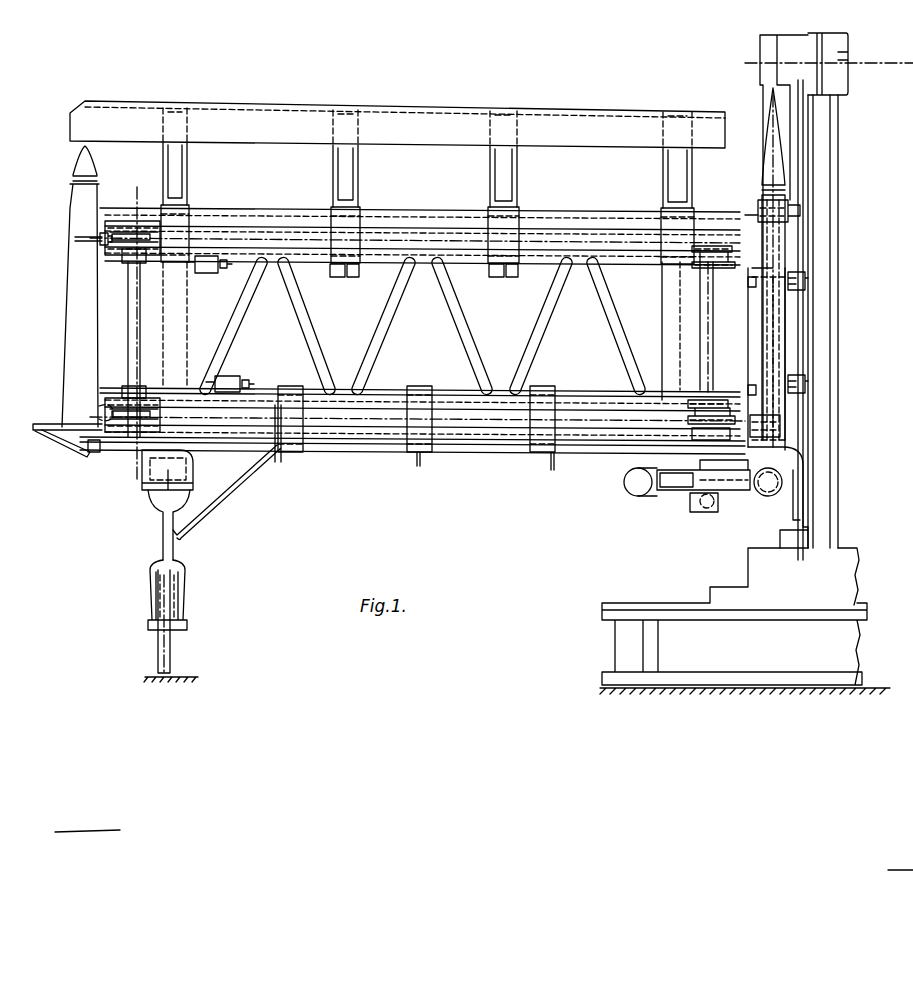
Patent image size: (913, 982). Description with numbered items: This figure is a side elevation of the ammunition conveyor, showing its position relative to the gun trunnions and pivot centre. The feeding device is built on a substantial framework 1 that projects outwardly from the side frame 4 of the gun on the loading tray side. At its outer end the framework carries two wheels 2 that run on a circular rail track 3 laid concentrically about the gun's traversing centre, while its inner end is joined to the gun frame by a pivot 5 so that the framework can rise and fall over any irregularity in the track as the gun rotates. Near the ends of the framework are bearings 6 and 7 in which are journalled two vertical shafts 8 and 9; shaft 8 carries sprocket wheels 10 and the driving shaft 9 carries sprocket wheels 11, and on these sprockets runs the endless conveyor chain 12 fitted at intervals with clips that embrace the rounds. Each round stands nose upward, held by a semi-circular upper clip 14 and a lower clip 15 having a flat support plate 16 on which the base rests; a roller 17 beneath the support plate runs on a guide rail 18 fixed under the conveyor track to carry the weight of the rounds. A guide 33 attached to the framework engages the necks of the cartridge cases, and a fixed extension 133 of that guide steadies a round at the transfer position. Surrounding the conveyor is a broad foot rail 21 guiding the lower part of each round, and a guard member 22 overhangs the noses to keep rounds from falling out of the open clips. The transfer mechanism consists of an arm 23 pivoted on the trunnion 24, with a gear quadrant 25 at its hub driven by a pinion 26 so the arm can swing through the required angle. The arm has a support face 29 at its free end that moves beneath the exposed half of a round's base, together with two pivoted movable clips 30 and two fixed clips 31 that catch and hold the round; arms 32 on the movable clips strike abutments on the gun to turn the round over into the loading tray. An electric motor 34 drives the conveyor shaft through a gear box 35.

The framework 1 is at (398, 360).
The wheels 2 is at (171, 645).
The circular rail track 3 is at (158, 676).
The side frame 4 is at (828, 420).
The pivot 5 is at (778, 490).
The bearing 6 is at (126, 260).
The bearing 7 is at (728, 264).
The vertical shaft 8 is at (136, 322).
The driving shaft 9 is at (714, 354).
The sprocket wheels 10 is at (158, 228).
The sprocket wheels 11 is at (722, 250).
The endless conveyor chain 12 is at (378, 240).
The upper clip 14 is at (88, 243).
The lower clip 15 is at (100, 412).
The support plate 16 is at (62, 448).
The roller 17 is at (90, 450).
The guide rail 18 is at (140, 466).
The foot rail 21 is at (48, 424).
The guard member 22 is at (468, 140).
The transfer arm 23 is at (796, 190).
The trunnion 24 is at (848, 60).
The gear quadrant 25 is at (763, 105).
The pinion 26 is at (757, 458).
The support face 29 is at (790, 456).
The movable clips 30 is at (752, 284).
The fixed clips 31 is at (758, 210).
The arms 32 is at (805, 284).
The guide 33 is at (466, 222).
The electric motor 34 is at (697, 504).
The gear box 35 is at (702, 512).
The extension of the guide 133 is at (758, 216).